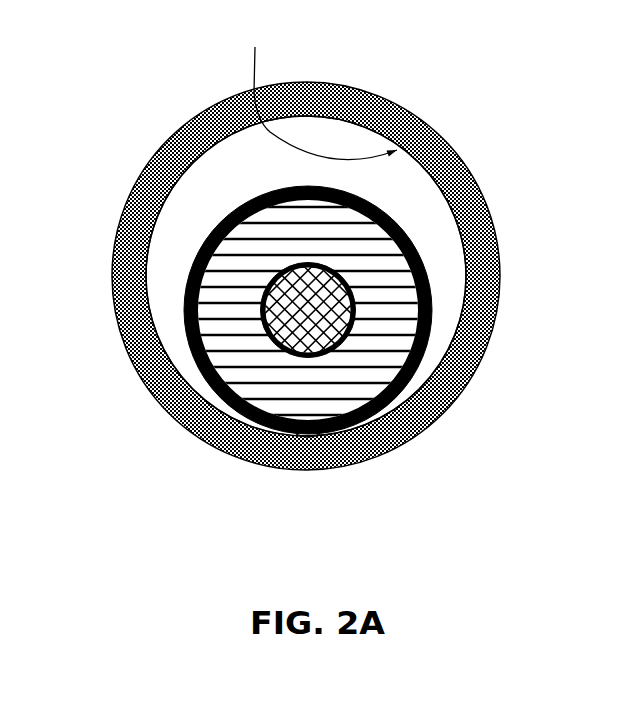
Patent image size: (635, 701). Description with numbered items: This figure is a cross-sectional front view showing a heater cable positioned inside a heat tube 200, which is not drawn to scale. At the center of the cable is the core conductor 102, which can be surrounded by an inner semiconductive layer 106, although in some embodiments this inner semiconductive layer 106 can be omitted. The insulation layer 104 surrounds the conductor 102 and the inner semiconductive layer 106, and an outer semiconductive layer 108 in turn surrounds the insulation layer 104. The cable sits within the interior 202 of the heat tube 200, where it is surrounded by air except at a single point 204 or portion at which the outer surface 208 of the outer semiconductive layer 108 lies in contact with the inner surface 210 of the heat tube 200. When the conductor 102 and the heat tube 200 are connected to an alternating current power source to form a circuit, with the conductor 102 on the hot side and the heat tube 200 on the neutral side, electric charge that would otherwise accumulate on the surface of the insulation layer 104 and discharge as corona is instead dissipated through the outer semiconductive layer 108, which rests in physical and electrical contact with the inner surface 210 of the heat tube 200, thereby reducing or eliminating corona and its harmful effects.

The heat tube 200 is at (200, 120).
The interior of the heat tube 202 is at (193, 227).
The point of contact 204 is at (308, 442).
The outer surface of the outer semiconductive layer 208 is at (432, 265).
The inner surface of the heat tube 210 is at (325, 90).
The outer semiconductive layer 108 is at (385, 212).
The insulation layer 104 is at (215, 323).
The core conductor 102 is at (297, 328).
The inner semiconductive layer 106 is at (362, 333).